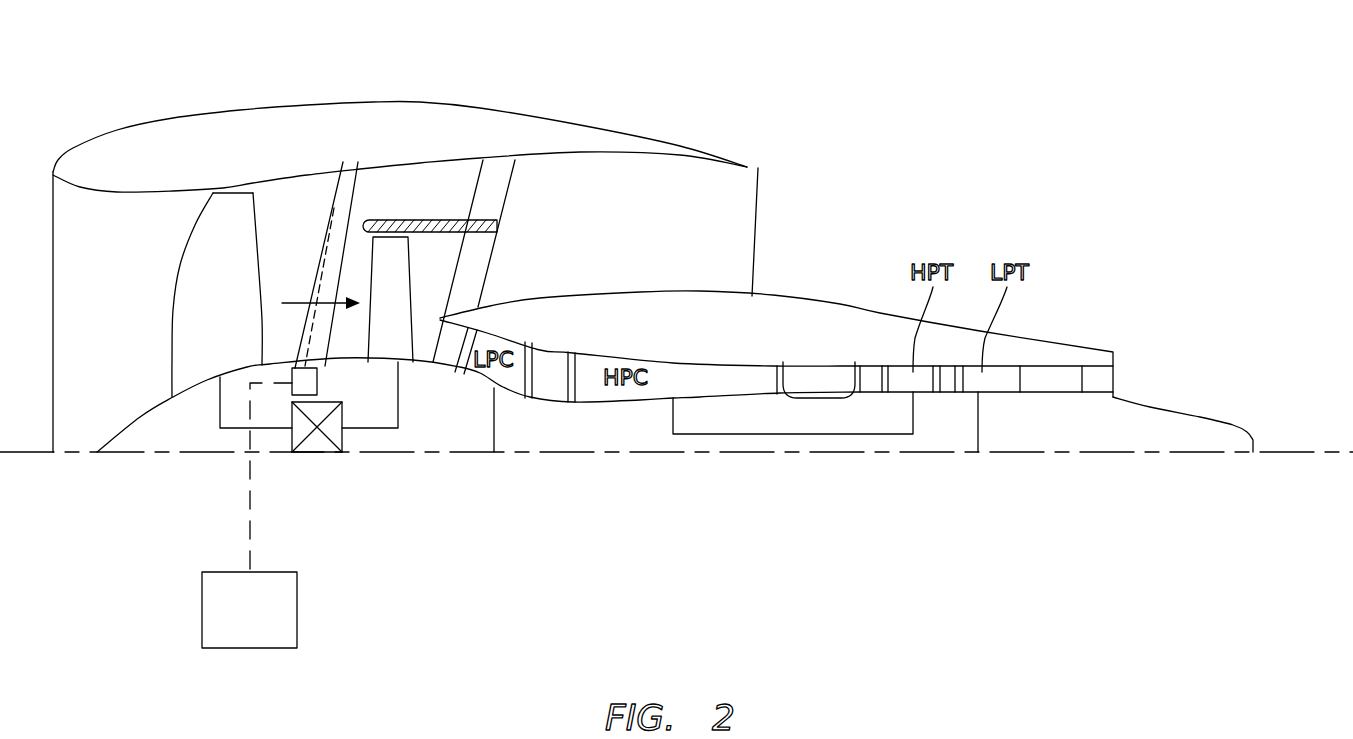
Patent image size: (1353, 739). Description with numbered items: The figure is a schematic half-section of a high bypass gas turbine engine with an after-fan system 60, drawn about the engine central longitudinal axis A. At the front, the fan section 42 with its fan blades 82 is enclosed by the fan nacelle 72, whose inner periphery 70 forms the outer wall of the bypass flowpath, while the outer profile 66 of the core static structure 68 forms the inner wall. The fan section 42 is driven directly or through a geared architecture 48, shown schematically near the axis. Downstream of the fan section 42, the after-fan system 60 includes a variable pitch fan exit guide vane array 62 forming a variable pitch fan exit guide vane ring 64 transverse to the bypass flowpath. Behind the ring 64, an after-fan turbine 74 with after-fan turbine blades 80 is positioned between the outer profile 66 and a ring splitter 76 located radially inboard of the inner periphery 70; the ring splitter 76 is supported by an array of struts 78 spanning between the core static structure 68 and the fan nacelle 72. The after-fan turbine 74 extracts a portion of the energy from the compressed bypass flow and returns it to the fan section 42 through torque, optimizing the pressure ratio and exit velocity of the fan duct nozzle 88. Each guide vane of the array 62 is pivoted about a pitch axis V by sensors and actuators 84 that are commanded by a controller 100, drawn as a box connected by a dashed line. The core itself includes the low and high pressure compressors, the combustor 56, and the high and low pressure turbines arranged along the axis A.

The fan section 42 is at (155, 317).
The geared architecture 48 is at (317, 443).
The combustor 56 is at (822, 383).
The after-fan system 60 is at (442, 198).
The variable pitch fan exit guide vane array 62 is at (324, 212).
The variable pitch fan exit guide vane ring 64 is at (300, 276).
The outer profile 66 is at (349, 363).
The core static structure 68 is at (458, 430).
The inner periphery 70 is at (168, 191).
The fan nacelle 72 is at (118, 160).
The after-fan turbine 74 is at (388, 250).
The ring splitter 76 is at (418, 219).
The struts 78 is at (498, 171).
The after-fan turbine blades 80 is at (408, 275).
The fan blades 82 is at (232, 289).
The sensors and actuators 84 is at (294, 385).
The fan duct nozzle 88 is at (728, 192).
The controller 100 is at (270, 619).
The engine central longitudinal axis A is at (1333, 455).
The pitch axis V is at (307, 352).